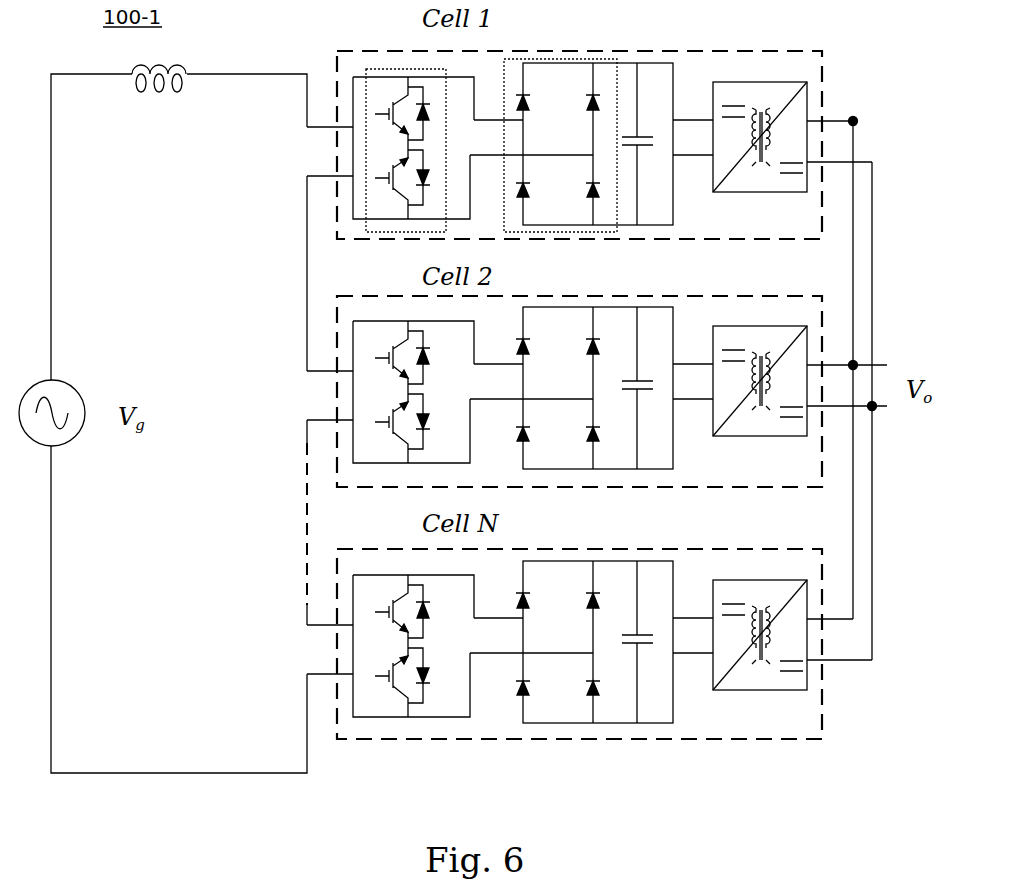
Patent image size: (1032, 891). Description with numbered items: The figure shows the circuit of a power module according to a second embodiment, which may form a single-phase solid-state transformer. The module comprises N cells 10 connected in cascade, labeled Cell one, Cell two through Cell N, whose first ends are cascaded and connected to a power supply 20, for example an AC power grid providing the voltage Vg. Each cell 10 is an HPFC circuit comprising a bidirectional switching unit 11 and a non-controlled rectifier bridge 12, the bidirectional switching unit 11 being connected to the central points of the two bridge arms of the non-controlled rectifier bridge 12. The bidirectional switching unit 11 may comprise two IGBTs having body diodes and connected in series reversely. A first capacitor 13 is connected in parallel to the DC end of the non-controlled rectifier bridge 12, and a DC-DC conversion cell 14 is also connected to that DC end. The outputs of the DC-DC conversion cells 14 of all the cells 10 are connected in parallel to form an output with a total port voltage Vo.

The cell 10 is at (812, 50).
The bidirectional switching unit 11 is at (395, 68).
The non-controlled rectifier bridge 12 is at (552, 59).
The first capacitor 13 is at (643, 128).
The DC-DC conversion cell 14 is at (748, 82).
The power supply 20 is at (77, 378).